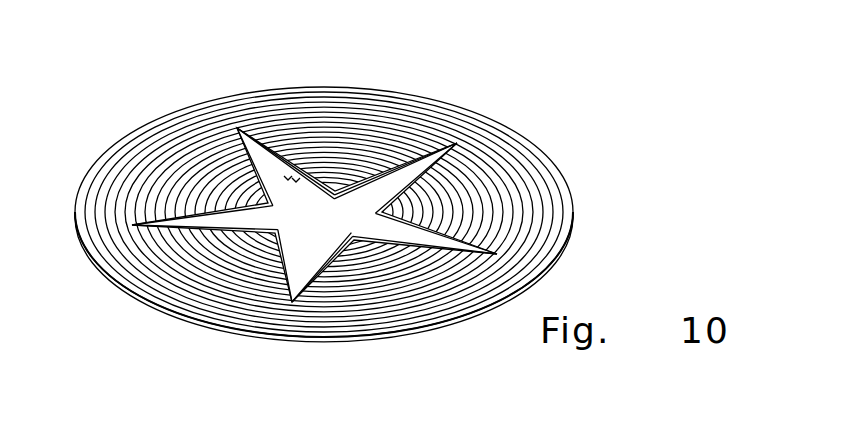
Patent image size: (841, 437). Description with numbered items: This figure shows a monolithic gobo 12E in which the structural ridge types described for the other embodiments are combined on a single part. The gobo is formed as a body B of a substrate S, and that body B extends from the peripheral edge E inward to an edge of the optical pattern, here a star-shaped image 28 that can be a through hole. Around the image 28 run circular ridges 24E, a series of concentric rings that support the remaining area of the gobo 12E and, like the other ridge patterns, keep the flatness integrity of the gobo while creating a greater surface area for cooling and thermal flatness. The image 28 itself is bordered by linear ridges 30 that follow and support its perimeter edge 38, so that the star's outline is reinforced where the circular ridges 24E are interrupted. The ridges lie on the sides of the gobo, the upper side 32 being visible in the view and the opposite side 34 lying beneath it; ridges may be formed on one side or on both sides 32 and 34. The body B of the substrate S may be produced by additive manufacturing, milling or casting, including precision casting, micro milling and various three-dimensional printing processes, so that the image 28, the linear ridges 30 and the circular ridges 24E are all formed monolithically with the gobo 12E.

The monolithic gobo 12E is at (591, 182).
The circular ridges 24E is at (452, 108).
The side 32 is at (381, 72).
The side 34 is at (353, 360).
The image 28 is at (327, 234).
The linear ridges 30 is at (375, 196).
The perimeter edge 38 is at (296, 178).
The peripheral edge E is at (123, 140).
The substrate S is at (76, 231).
The body B is at (120, 308).